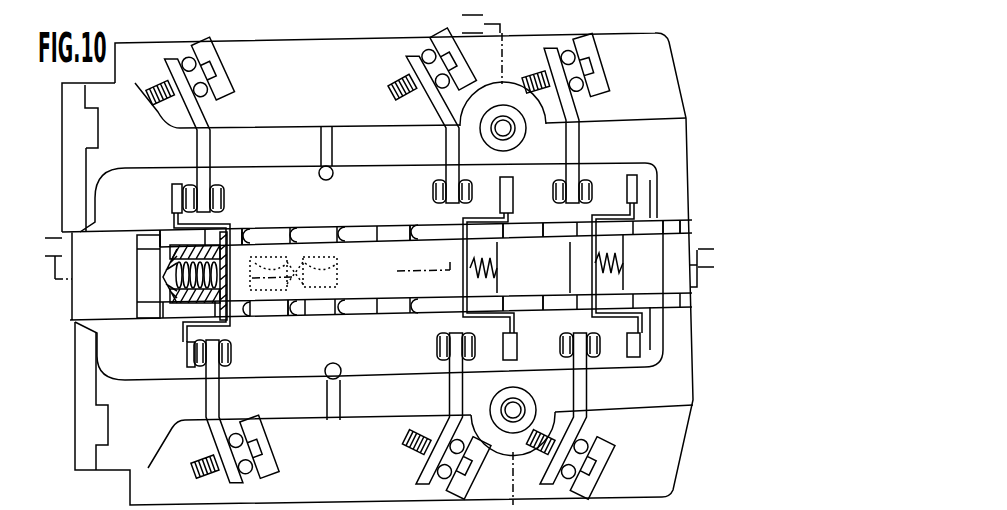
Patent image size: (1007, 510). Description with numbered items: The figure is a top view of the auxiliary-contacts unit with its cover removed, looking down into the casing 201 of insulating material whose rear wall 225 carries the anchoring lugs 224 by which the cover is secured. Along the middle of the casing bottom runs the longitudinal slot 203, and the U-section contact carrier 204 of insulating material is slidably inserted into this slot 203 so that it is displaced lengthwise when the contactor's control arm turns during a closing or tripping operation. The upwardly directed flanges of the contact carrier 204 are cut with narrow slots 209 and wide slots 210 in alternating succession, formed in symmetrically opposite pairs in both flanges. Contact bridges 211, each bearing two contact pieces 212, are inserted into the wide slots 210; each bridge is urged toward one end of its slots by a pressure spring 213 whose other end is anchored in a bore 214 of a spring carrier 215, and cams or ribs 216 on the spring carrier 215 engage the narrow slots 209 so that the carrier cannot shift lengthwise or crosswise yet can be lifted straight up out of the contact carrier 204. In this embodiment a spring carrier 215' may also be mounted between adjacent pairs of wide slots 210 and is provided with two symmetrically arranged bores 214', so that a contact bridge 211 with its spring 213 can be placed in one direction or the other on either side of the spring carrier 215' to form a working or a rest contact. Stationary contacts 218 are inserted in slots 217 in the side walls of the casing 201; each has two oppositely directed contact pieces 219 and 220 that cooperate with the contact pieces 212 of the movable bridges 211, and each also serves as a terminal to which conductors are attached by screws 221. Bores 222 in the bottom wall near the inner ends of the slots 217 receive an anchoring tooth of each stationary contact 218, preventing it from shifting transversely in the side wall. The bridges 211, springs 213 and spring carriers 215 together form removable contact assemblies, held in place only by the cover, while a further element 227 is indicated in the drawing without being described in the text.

The casing 201 is at (673, 122).
The longitudinal slot 203 is at (98, 303).
The contact carrier 204 is at (407, 263).
The narrow slots 209 is at (292, 236).
The wide slots 210 is at (246, 236).
The contact bridge 211 is at (462, 219).
The contact pieces 212 is at (175, 190).
The pressure spring 213 is at (170, 282).
The bore 214 is at (182, 290).
The bores 214' is at (314, 265).
The spring carrier 215 is at (393, 268).
The spring carrier 215' is at (341, 276).
The cams or ribs 216 is at (167, 238).
The slots 217 is at (326, 127).
The stationary contacts 218 is at (205, 122).
The contact piece 219 is at (192, 186).
The contact piece 220 is at (218, 187).
The screws 221 is at (203, 42).
The bores 222 is at (318, 172).
The anchoring lugs 224 is at (94, 136).
The rear wall 225 is at (72, 164).
The insulating piece 227 is at (247, 256).